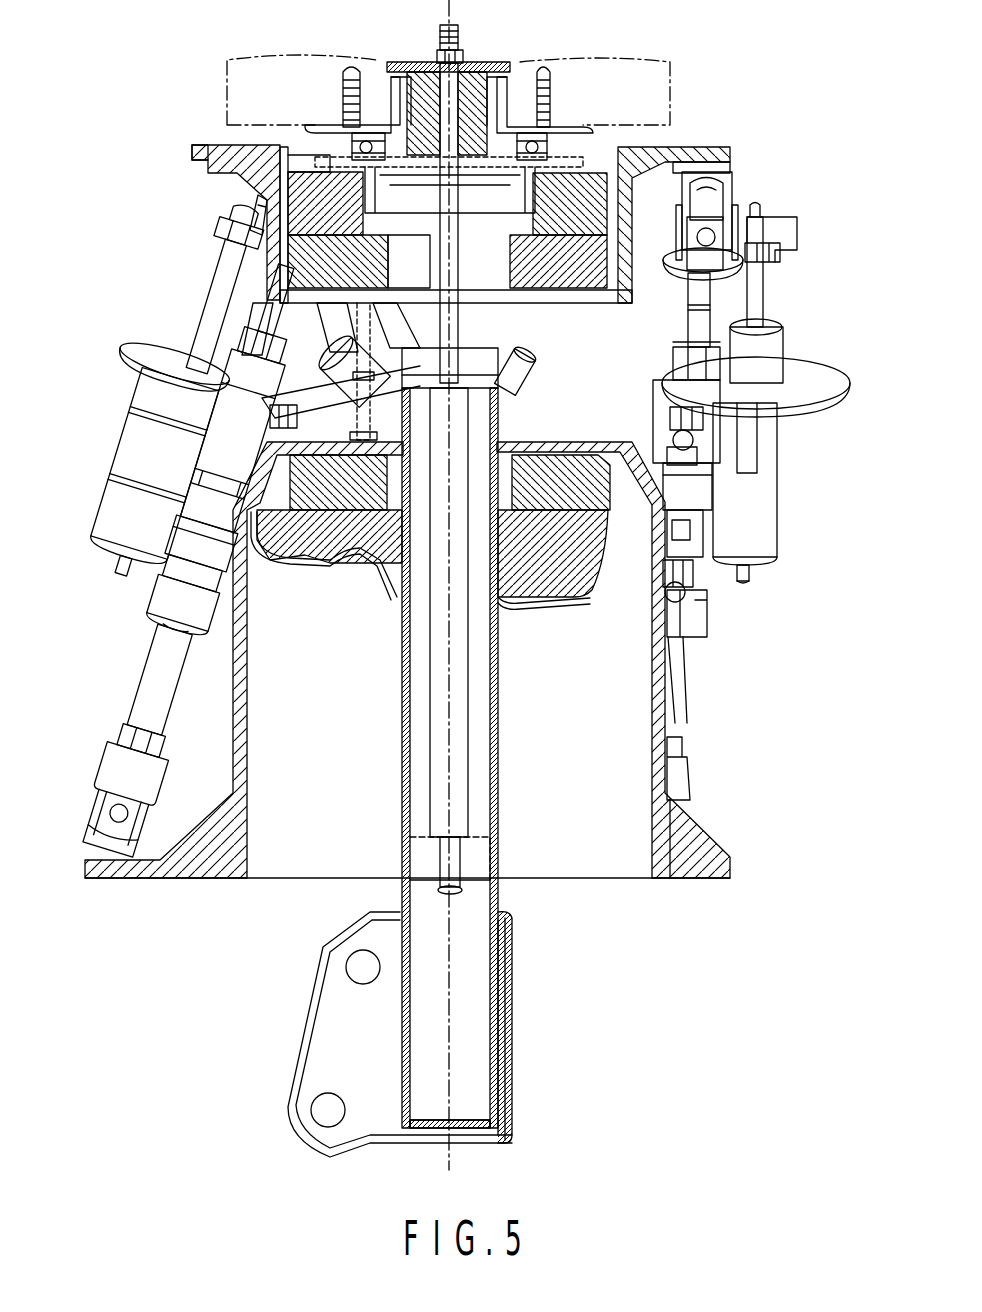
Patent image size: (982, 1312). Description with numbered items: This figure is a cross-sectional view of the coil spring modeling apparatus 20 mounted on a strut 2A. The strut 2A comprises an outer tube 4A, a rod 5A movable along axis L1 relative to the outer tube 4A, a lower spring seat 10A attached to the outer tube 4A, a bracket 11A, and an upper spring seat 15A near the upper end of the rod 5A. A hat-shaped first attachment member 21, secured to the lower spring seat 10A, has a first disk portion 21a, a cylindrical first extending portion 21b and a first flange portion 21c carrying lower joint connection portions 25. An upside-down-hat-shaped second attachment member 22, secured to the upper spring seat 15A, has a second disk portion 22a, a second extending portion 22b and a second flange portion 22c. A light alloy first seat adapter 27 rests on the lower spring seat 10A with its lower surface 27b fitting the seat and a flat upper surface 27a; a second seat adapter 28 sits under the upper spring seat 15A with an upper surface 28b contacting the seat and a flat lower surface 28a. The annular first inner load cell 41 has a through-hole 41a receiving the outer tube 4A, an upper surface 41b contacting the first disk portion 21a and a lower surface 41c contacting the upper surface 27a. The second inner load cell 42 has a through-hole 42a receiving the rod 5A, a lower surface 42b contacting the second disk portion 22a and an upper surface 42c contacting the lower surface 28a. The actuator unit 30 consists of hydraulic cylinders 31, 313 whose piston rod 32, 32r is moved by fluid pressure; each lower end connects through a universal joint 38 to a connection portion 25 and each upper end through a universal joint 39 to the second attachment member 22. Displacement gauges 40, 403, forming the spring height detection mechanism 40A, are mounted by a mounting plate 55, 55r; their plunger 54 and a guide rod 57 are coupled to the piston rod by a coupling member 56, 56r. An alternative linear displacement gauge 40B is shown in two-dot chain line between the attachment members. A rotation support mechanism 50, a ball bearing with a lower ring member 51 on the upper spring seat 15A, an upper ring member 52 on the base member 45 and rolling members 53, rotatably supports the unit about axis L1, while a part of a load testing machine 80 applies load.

The part of a load testing machine 80 is at (682, 94).
The upper ring member 52 is at (367, 127).
The rotation support mechanism 50 is at (583, 130).
The upper spring seat 15A is at (307, 167).
The lower ring member 51 is at (320, 160).
The rolling members 53 is at (347, 165).
The base member 45 is at (550, 125).
The second seat adapter 28 is at (700, 173).
The upper surface of second seat adapter 28b is at (290, 160).
The lower surface of second seat adapter 28a is at (625, 270).
The linear displacement gauge 40B is at (410, 300).
The second inner load cell 42 is at (580, 280).
The through-hole of second inner load cell 42a is at (520, 282).
The lower surface of second inner load cell 42b is at (545, 285).
The upper surface of second inner load cell 42c is at (580, 200).
The second attachment member 22 is at (700, 147).
The second flange portion 22c is at (192, 153).
The second extending portion 22b is at (262, 199).
The second disk portion 22a is at (312, 303).
The outer tube 4A is at (498, 800).
The rod 5A is at (470, 720).
The axis L1 is at (449, 995).
The strut 2A is at (385, 745).
The first attachment member 21 is at (660, 696).
The first extending portion 21b is at (230, 695).
The first flange portion 21c is at (150, 880).
The first disk portion 21a is at (315, 405).
The first inner load cell 41 is at (560, 468).
The through-hole of first inner load cell 41a is at (515, 450).
The upper surface of first inner load cell 41b is at (600, 466).
The lower surface of first inner load cell 41c is at (530, 603).
The first seat adapter 27 is at (560, 580).
The upper surface of first seat adapter 27a is at (612, 528).
The lower surface of first seat adapter 27b is at (305, 575).
The lower spring seat 10A is at (328, 575).
The bracket 11A is at (320, 1035).
The coil spring modeling apparatus 20 is at (142, 284).
The coupling member 56 is at (210, 228).
The plunger 54 is at (217, 272).
The piston rod 32 is at (255, 306).
The mounting plate 55 is at (157, 365).
The displacement gauge 40 is at (148, 428).
The hydraulic cylinder 31 is at (210, 466).
The spring height detection mechanism 40A is at (113, 514).
The actuator unit 30 is at (123, 620).
The universal joint 38 is at (120, 752).
The lower joint connection portion 25 is at (108, 822).
The universal joint 39 is at (735, 208).
The rod 32r is at (688, 333).
The actuator body 313 is at (725, 450).
The motor 403 is at (770, 540).
The plate 55r is at (795, 364).
The guide rod 57 is at (765, 303).
The nut 56r is at (785, 249).